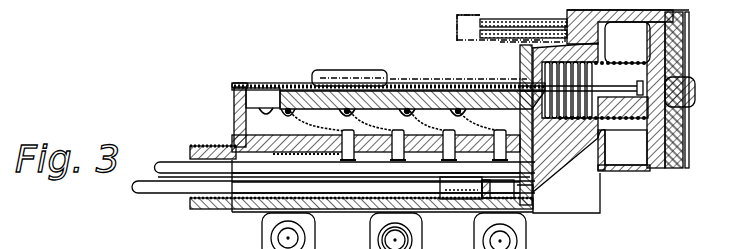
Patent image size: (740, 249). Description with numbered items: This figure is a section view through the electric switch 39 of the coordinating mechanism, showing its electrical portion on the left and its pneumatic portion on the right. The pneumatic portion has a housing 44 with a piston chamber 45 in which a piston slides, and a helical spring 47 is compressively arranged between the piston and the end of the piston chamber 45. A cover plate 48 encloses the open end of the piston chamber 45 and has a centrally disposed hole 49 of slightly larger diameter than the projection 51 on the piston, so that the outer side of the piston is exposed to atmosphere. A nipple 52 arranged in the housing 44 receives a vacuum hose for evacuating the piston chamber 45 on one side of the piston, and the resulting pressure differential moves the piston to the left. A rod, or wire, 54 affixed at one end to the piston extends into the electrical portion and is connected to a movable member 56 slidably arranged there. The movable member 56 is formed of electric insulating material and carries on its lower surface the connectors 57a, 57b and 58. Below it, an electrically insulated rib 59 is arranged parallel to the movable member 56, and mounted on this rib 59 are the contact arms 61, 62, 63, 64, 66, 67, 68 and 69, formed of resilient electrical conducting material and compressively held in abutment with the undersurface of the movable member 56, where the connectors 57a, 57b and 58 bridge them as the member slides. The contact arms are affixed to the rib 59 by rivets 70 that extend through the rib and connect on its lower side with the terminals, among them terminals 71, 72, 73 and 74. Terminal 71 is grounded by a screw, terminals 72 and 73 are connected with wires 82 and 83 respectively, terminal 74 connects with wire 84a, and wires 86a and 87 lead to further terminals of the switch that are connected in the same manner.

The electric switch 39 is at (230, 99).
The housing 44 is at (618, 170).
The piston chamber 45 is at (629, 142).
The helical spring 47 is at (650, 152).
The cover plate 48 is at (686, 130).
The hole 49 is at (684, 108).
The projection 51 is at (694, 98).
The nipple 52 is at (633, 17).
The rod 54 is at (605, 90).
The movable member 56 is at (474, 97).
The connector 57a is at (416, 96).
The connector 57b is at (416, 30).
The connector 58 is at (502, 97).
The electrically insulated rib 59 is at (236, 128).
The contact arm 61 is at (264, 108).
The contact arm 62 is at (307, 108).
The contact arm 63 is at (378, 96).
The contact arm 64 is at (448, 96).
The contact arm 66 is at (454, 43).
The contact arm 67 is at (375, 30).
The contact arm 68 is at (301, 43).
The contact arm 69 is at (253, 41).
The rivets 70 is at (391, 160).
The terminal 71 is at (274, 238).
The terminal 72 is at (378, 244).
The terminal 73 is at (413, 238).
The terminal 74 is at (486, 231).
The wire 82 is at (392, 0).
The wire 83 is at (170, 162).
The wire 84a is at (160, 190).
The wire 86a is at (150, 215).
The wire 87 is at (164, 106).